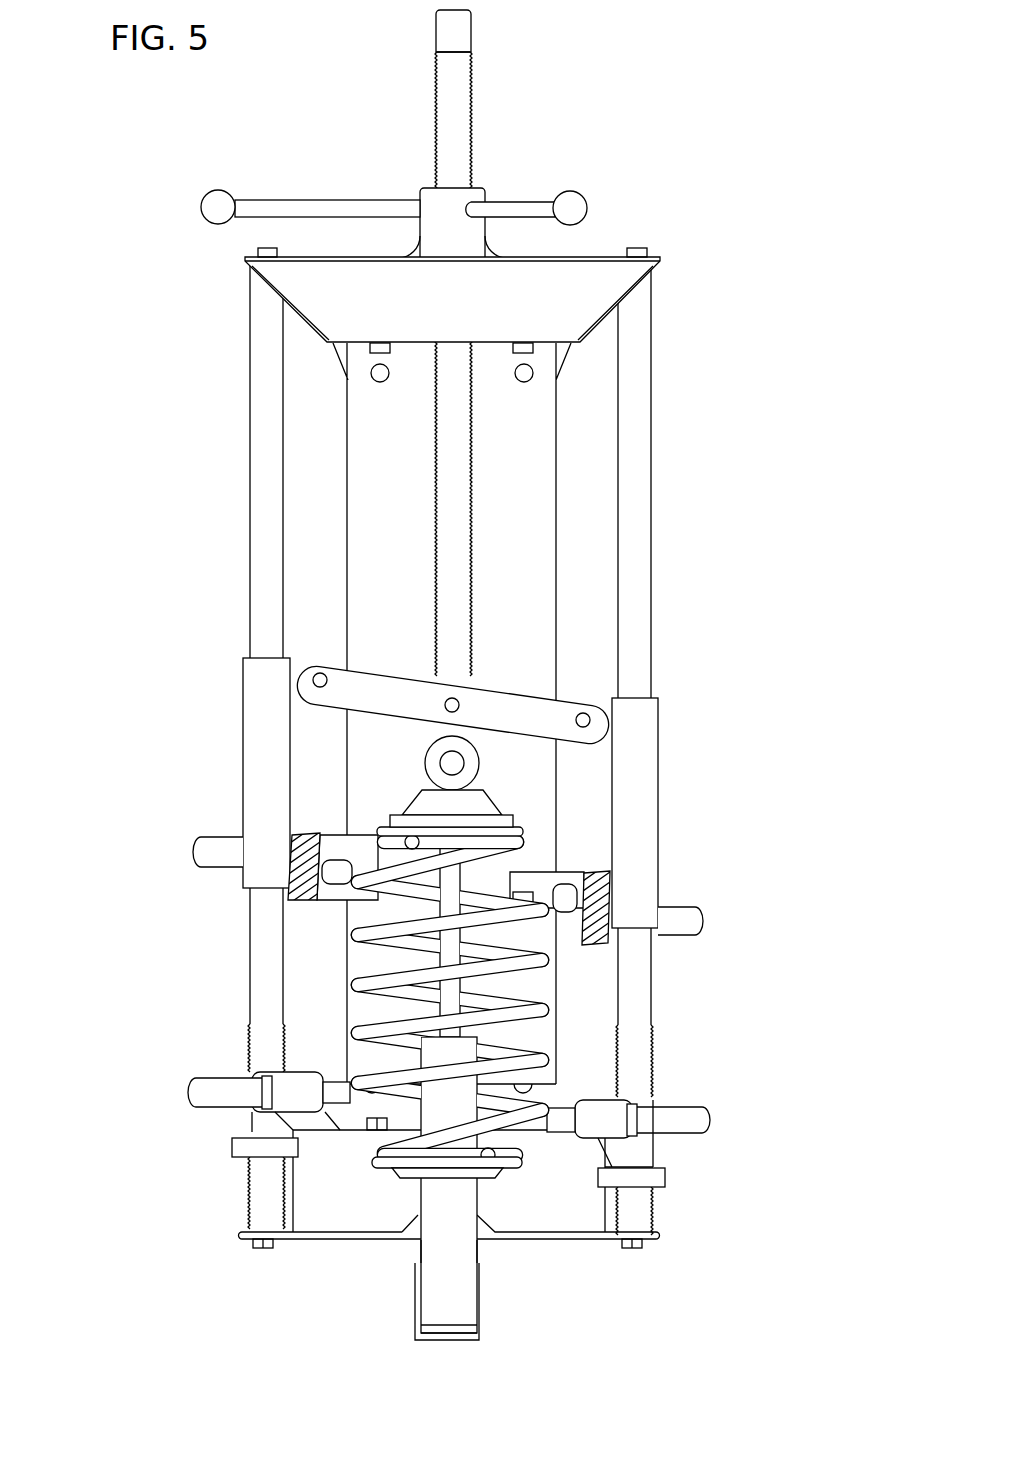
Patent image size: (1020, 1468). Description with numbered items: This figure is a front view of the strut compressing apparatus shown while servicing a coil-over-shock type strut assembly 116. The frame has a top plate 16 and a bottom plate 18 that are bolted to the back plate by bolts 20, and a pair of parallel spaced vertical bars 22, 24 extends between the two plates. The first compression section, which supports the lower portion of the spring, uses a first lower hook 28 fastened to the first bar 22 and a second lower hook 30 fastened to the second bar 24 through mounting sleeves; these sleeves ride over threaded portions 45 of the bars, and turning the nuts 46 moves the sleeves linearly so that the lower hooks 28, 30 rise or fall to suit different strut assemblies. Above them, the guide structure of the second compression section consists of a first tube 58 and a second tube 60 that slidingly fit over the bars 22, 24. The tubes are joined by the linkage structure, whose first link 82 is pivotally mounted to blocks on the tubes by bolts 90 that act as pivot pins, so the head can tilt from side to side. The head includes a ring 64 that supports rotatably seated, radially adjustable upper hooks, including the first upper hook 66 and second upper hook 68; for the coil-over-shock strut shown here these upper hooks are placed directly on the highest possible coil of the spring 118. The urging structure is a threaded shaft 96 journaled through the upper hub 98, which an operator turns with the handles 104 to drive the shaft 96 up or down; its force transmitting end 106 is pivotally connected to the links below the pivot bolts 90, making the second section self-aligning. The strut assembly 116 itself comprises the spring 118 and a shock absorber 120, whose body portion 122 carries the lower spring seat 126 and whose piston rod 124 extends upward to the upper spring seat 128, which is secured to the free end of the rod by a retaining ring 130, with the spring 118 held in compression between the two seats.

The top plate 16 is at (461, 306).
The bottom plate 18 is at (327, 1210).
The bolts 20 is at (377, 382).
The first vertical bar 22 is at (260, 968).
The second vertical bar 24 is at (635, 972).
The first lower hook 28 is at (227, 1086).
The second lower hook 30 is at (670, 1117).
The threaded portions 45 is at (261, 1202).
The nuts 46 is at (234, 1147).
The first tube 58 is at (262, 772).
The second tube 60 is at (630, 800).
The ring 64 is at (338, 898).
The first upper hook 66 is at (329, 863).
The second upper hook 68 is at (560, 900).
The first link 82 is at (392, 690).
The bolts 90 is at (322, 672).
The threaded shaft 96 is at (452, 115).
The upper hub 98 is at (428, 220).
The handles 104 is at (327, 208).
The force transmitting end 106 is at (460, 688).
The strut assembly 116 is at (405, 1253).
The spring 118 is at (529, 1063).
The shock absorber 120 is at (488, 1258).
The body portion 122 is at (449, 1313).
The piston rod 124 is at (450, 992).
The lower spring seat 126 is at (478, 1173).
The upper spring seat 128 is at (522, 832).
The retaining ring 130 is at (395, 820).